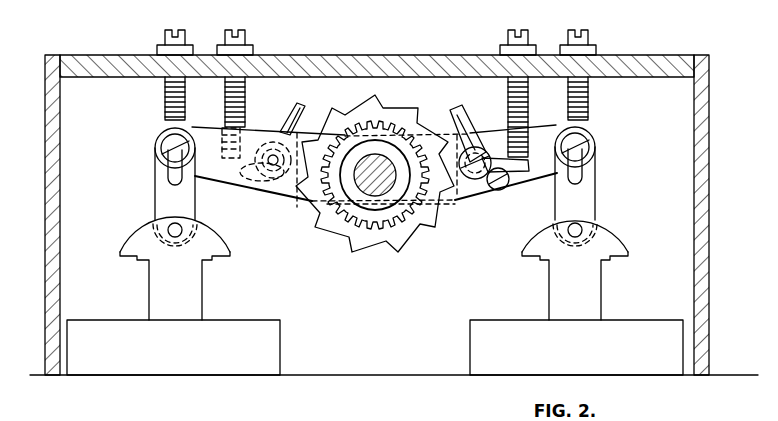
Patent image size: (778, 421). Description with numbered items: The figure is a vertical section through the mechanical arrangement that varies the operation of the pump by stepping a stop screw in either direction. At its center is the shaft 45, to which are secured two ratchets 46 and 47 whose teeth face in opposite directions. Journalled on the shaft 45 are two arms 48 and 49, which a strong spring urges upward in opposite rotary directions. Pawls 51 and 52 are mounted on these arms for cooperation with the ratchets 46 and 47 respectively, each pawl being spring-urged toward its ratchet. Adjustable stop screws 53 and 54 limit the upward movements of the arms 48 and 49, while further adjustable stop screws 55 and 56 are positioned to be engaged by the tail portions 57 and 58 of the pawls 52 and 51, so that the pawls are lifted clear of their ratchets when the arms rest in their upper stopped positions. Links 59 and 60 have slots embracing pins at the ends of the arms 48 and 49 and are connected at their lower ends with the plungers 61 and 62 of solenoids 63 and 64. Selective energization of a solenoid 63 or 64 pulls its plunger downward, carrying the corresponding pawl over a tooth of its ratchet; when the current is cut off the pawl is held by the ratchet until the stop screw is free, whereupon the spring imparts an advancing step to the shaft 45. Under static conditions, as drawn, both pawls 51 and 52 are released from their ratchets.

The shaft 45 is at (385, 185).
The ratchet 46 is at (345, 232).
The ratchet 47 is at (406, 108).
The arm 48 is at (270, 198).
The arm 49 is at (485, 195).
The pawl 51 is at (296, 110).
The pawl 52 is at (465, 110).
The adjustable stop screw 53 is at (590, 108).
The adjustable stop screw 54 is at (165, 99).
The adjustable stop screw 55 is at (528, 112).
The adjustable stop screw 56 is at (247, 112).
The tail portion 57 is at (530, 165).
The tail portion 58 is at (222, 158).
The link 59 is at (196, 192).
The link 60 is at (596, 192).
The plunger 61 is at (195, 293).
The plunger 62 is at (600, 292).
The solenoid 63 is at (262, 320).
The solenoid 64 is at (500, 320).